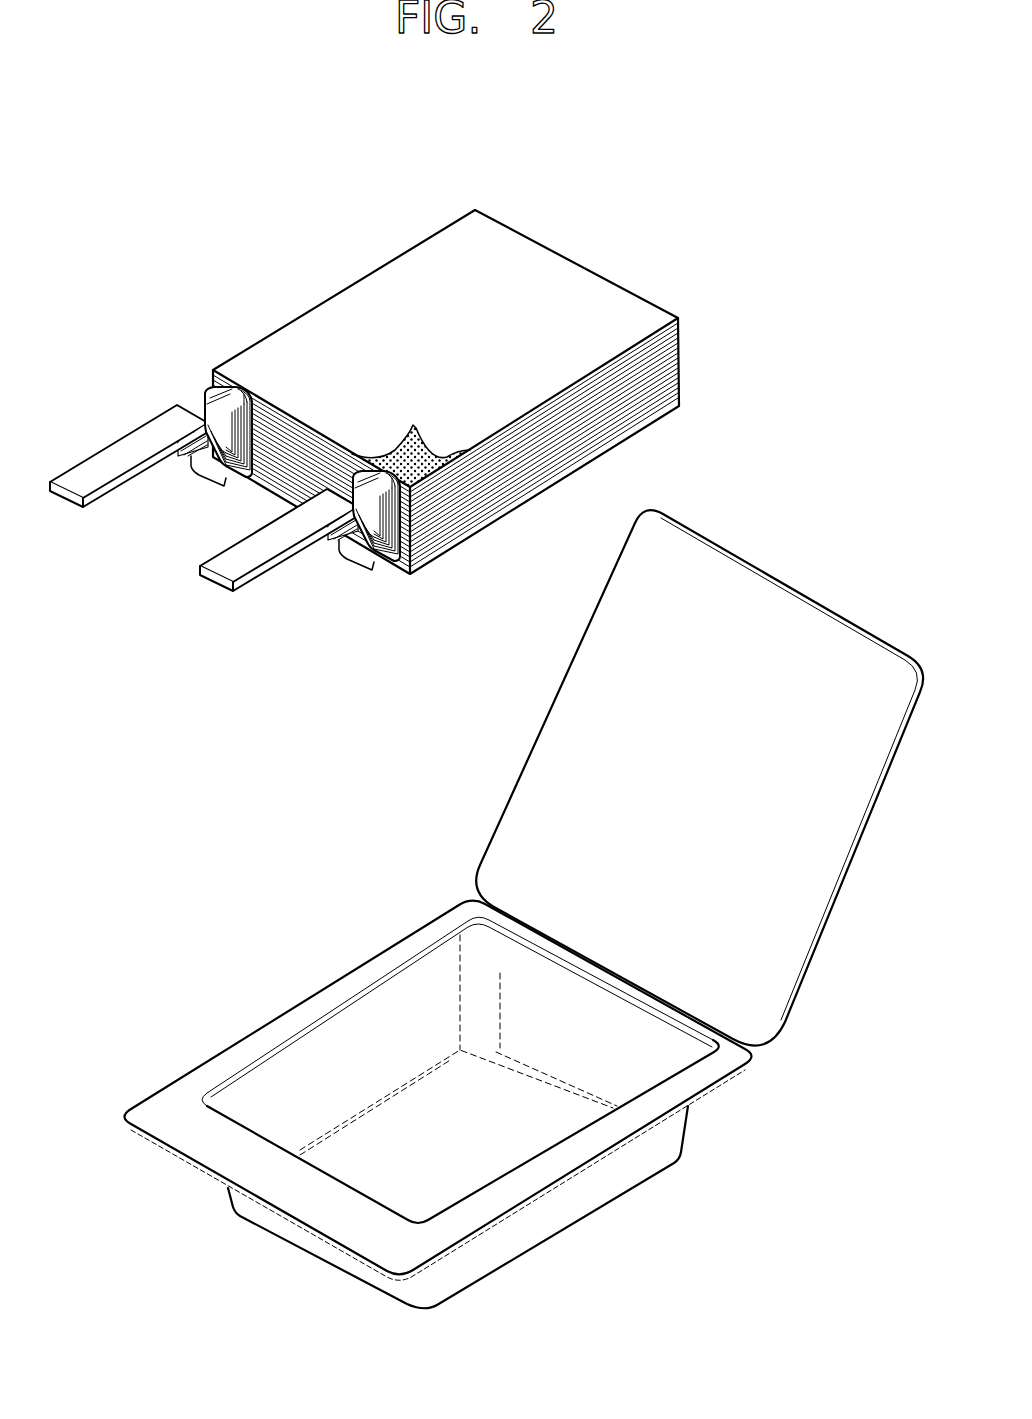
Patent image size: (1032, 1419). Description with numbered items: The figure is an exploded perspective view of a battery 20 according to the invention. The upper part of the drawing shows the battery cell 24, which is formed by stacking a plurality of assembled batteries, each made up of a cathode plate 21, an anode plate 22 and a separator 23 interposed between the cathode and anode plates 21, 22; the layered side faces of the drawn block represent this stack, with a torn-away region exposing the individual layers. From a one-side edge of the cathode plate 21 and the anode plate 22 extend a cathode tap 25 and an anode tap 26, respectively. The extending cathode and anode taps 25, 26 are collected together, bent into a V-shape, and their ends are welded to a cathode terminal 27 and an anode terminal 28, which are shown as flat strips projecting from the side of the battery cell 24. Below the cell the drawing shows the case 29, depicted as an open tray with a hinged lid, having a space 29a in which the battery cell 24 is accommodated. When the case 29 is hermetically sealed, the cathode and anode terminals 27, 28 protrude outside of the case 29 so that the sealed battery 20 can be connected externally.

The battery 20 is at (636, 242).
The cathode plate 21 is at (517, 420).
The anode plate 22 is at (575, 413).
The separator 23 is at (543, 417).
The battery cell 24 is at (316, 262).
The cathode tap 25 is at (212, 408).
The anode tap 26 is at (355, 472).
The cathode terminal 27 is at (93, 470).
The anode terminal 28 is at (237, 558).
The case 29 is at (657, 1153).
The space 29a is at (473, 1173).